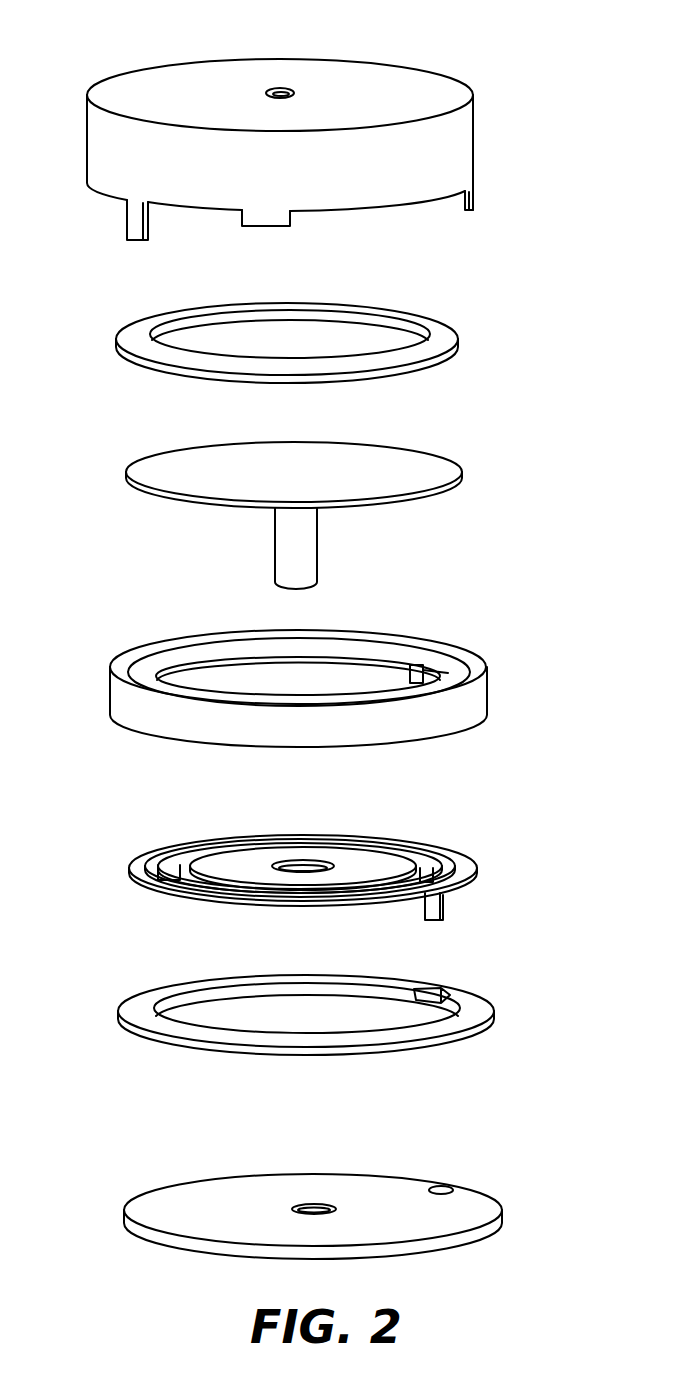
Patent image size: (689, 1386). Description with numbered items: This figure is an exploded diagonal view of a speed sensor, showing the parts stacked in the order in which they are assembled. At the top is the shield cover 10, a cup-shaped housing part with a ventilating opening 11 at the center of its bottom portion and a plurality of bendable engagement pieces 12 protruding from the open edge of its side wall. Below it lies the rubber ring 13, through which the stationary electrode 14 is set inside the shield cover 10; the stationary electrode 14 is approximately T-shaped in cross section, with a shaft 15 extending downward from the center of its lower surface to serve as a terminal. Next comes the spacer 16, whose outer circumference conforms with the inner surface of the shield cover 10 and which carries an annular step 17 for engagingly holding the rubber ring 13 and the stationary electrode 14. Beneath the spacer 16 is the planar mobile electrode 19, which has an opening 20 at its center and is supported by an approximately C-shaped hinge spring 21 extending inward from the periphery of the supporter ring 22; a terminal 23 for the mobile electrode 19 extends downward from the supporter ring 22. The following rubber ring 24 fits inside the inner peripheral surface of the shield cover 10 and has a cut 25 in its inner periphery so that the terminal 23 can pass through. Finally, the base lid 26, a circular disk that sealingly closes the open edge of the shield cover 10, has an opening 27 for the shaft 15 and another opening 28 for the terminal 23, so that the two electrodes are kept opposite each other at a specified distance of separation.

The shield cover 10 is at (448, 138).
The ventilating opening 11 is at (280, 90).
The bendable engagement pieces 12 is at (270, 219).
The rubber ring 13 is at (443, 332).
The stationary electrode 14 is at (442, 465).
The shaft 15 is at (307, 557).
The spacer 16 is at (477, 687).
The annular step 17 is at (168, 667).
The mobile electrode 19 is at (217, 848).
The opening 20 is at (298, 865).
The hinge spring 21 is at (172, 868).
The supporter ring 22 is at (467, 867).
The terminal 23 is at (443, 910).
The rubber ring 24 is at (482, 1012).
The cut 25 is at (427, 987).
The base lid 26 is at (487, 1205).
The opening 27 is at (312, 1207).
The opening 28 is at (437, 1190).